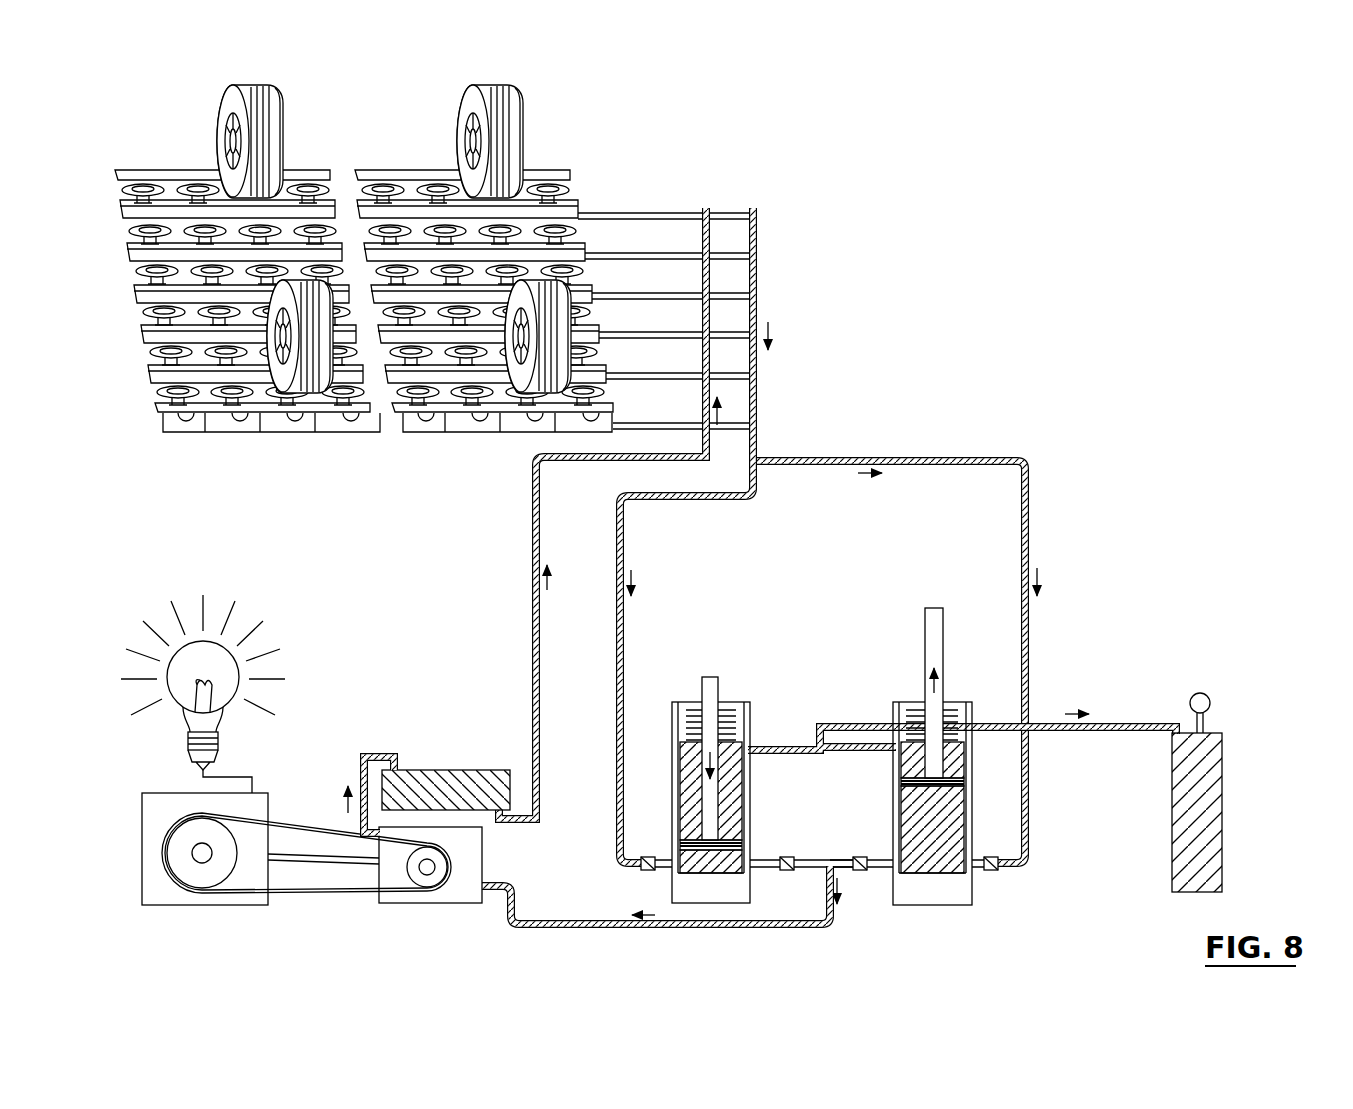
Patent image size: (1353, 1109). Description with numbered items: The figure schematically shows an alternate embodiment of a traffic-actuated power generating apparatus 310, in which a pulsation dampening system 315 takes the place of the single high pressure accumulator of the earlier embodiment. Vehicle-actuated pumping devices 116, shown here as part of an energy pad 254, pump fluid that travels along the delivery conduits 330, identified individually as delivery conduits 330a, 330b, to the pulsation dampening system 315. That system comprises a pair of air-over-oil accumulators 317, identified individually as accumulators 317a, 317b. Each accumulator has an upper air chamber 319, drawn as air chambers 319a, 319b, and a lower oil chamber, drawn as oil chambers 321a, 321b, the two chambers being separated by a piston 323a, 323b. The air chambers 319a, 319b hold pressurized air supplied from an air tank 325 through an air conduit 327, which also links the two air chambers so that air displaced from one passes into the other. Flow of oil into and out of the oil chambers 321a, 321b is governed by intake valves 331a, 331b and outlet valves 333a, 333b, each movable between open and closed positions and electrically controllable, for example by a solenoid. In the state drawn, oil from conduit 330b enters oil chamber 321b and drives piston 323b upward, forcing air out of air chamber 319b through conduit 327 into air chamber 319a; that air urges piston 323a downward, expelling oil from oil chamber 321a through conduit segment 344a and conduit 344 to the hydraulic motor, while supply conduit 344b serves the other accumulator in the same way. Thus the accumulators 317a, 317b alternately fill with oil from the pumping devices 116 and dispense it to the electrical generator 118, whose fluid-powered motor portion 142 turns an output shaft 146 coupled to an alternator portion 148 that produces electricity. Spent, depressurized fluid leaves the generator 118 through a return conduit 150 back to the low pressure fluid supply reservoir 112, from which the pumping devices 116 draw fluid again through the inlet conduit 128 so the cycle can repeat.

The pumping device 116 is at (406, 258).
The energy pad 254 is at (548, 182).
The traffic-actuated power generating apparatus 310 is at (698, 522).
The delivery conduit 330 is at (762, 415).
The delivery conduit 330a is at (623, 545).
The delivery conduit 330b is at (1030, 525).
The inlet conduit 128 is at (533, 628).
The pulsation dampening system 315 is at (924, 743).
The air-over-oil accumulators 317 is at (853, 760).
The air-over-oil accumulator 317a is at (705, 793).
The air-over-oil accumulator 317b is at (989, 734).
The upper air chamber 319 is at (687, 737).
The air chamber 319a is at (680, 758).
The air chamber 319b is at (962, 757).
The oil chamber 321a is at (718, 873).
The oil chamber 321b is at (960, 822).
The piston 323a is at (682, 842).
The piston 323b is at (902, 782).
The air conduit 327 is at (793, 748).
The air tank 325 is at (1224, 752).
The intake valve 331a is at (645, 870).
The outlet valve 333a is at (815, 883).
The intake valve 331b is at (862, 869).
The outlet valve 333b is at (1000, 869).
The supply conduit segment 344a is at (813, 866).
The supply conduit 344b is at (838, 866).
The supply conduit 344 is at (683, 932).
The electrical generator 118 is at (327, 765).
The alternator portion 148 is at (172, 792).
The fluid-powered motor portion 142 is at (456, 881).
The output shaft 146 is at (432, 870).
The low pressure fluid supply reservoir 112 is at (438, 768).
The return conduit 150 is at (360, 820).